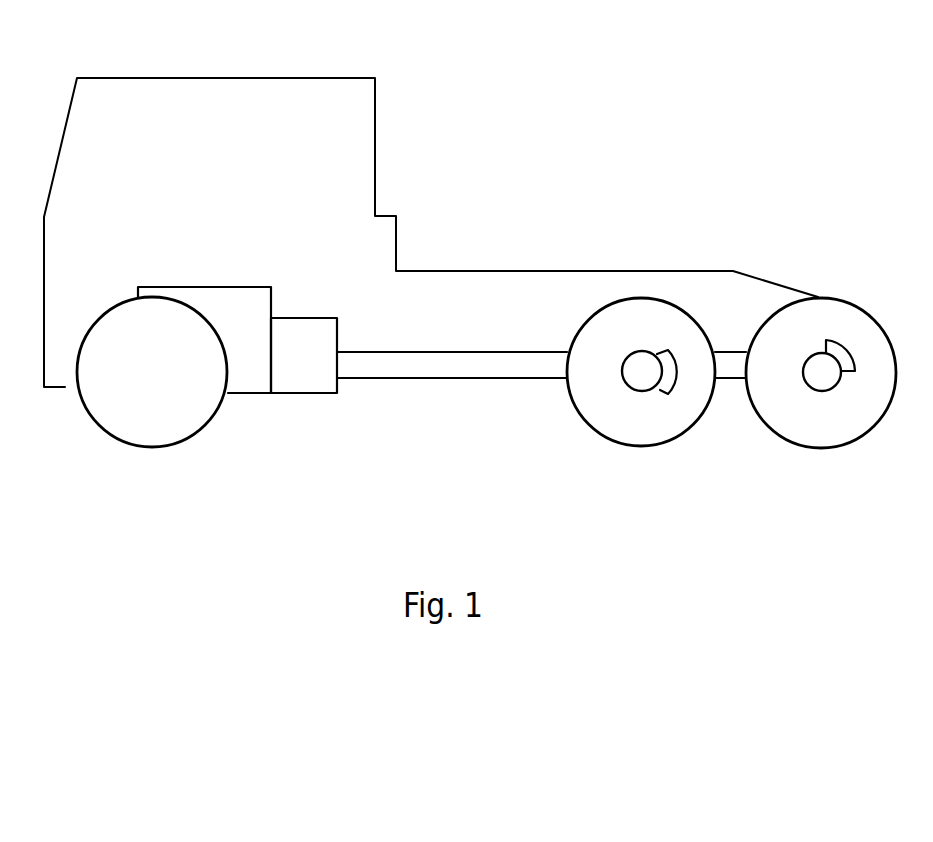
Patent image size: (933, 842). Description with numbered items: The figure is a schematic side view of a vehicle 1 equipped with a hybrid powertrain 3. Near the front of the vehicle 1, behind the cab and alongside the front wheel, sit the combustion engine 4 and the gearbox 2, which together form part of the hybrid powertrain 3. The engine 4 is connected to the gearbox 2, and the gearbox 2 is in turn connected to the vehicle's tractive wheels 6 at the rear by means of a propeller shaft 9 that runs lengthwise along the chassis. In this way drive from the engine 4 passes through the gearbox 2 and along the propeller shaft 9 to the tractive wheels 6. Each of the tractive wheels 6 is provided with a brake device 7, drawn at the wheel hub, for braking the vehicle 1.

The vehicle 1 is at (482, 269).
The gearbox 2 is at (330, 394).
The hybrid powertrain 3 is at (258, 357).
The combustion engine 4 is at (178, 287).
The tractive wheels 6 is at (685, 435).
The brake devices 7 is at (665, 351).
The propeller shaft 9 is at (427, 378).